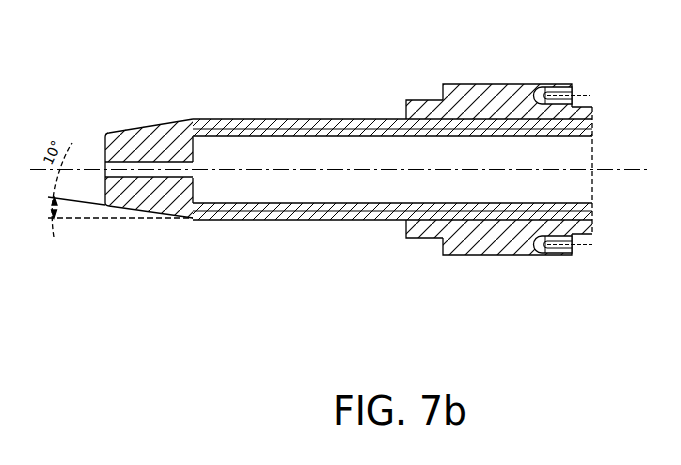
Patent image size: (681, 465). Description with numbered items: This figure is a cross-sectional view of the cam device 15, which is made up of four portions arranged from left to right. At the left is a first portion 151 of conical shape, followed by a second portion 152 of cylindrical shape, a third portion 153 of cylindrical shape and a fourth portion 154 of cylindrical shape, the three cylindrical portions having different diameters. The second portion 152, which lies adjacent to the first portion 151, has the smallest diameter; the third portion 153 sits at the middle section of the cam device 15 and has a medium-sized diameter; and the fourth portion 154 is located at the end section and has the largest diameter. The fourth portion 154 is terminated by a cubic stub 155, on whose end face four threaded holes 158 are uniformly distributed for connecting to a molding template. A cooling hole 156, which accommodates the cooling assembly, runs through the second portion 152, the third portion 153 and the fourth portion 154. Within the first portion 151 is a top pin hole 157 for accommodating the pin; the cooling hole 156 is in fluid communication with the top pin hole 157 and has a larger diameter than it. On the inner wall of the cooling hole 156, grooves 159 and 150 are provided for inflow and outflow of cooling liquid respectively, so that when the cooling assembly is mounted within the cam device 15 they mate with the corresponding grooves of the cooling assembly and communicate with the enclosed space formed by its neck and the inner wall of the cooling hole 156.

The cam device 15 is at (320, 39).
The groove 150 is at (340, 208).
The first portion 151 is at (147, 128).
The second portion 152 is at (303, 119).
The third portion 153 is at (423, 100).
The fourth portion 154 is at (503, 84).
The cubic stub 155 is at (580, 107).
The cooling hole 156 is at (573, 157).
The top pin hole 157 is at (107, 168).
The threaded holes 158 is at (578, 95).
The groove 159 is at (282, 132).